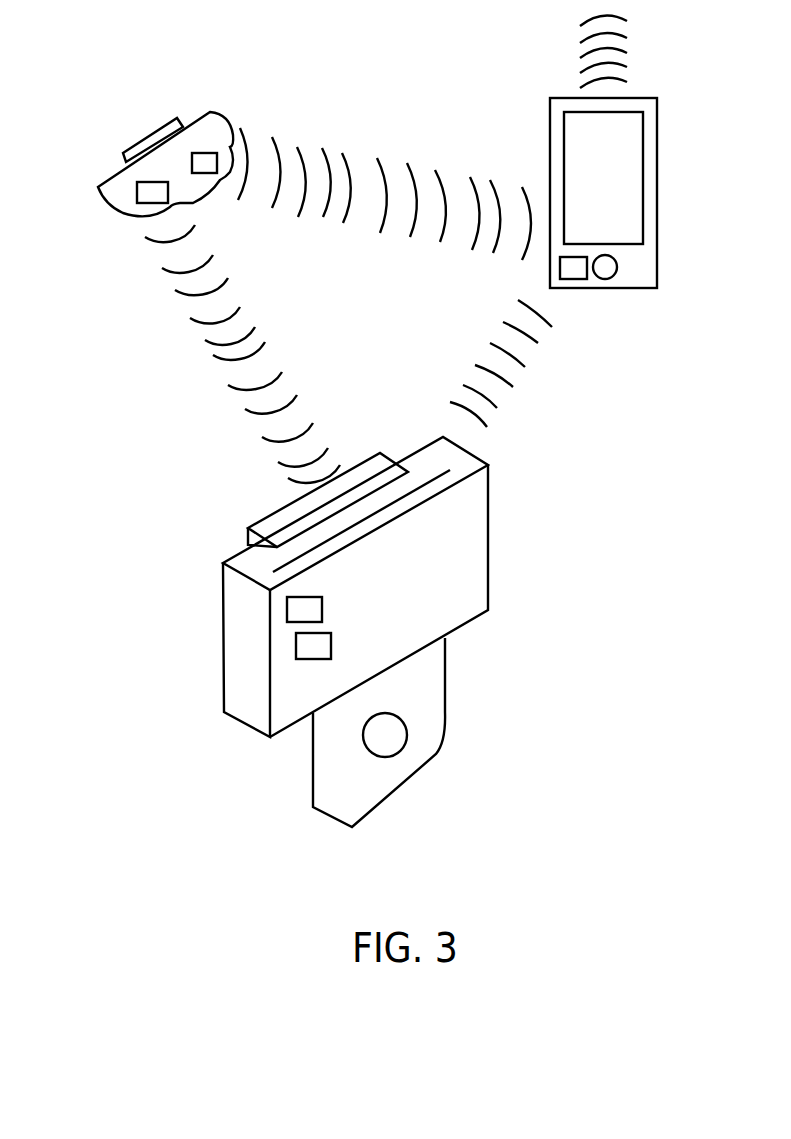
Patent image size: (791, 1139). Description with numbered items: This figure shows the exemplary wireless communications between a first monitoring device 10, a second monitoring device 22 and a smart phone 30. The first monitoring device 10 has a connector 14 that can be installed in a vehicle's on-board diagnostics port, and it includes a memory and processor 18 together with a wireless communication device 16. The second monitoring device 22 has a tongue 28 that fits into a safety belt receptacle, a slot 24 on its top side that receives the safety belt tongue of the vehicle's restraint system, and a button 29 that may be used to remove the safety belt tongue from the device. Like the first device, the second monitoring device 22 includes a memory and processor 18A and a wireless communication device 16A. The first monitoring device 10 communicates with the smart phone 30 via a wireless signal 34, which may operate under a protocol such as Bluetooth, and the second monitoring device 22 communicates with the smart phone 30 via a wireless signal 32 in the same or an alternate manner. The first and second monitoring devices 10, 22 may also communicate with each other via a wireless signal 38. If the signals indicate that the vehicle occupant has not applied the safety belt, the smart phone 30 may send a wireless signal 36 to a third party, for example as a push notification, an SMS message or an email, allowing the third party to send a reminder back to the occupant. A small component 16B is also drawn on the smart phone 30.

The first monitoring device 10 is at (235, 110).
The connector 14 is at (133, 147).
The wireless communication device 16 is at (147, 195).
The memory and processor 18 is at (200, 160).
The second monitoring device 22 is at (503, 470).
The slot 24 is at (435, 479).
The tongue 28 is at (440, 737).
The button 29 is at (272, 513).
The smart phone 30 is at (657, 171).
The wireless signal 32 is at (475, 365).
The wireless signal 34 is at (383, 167).
The wireless signal 36 is at (627, 66).
The wireless signal 38 is at (190, 320).
The wireless communication device 16A is at (296, 609).
The memory and processor 18A is at (305, 647).
The transceiver 16B is at (573, 268).